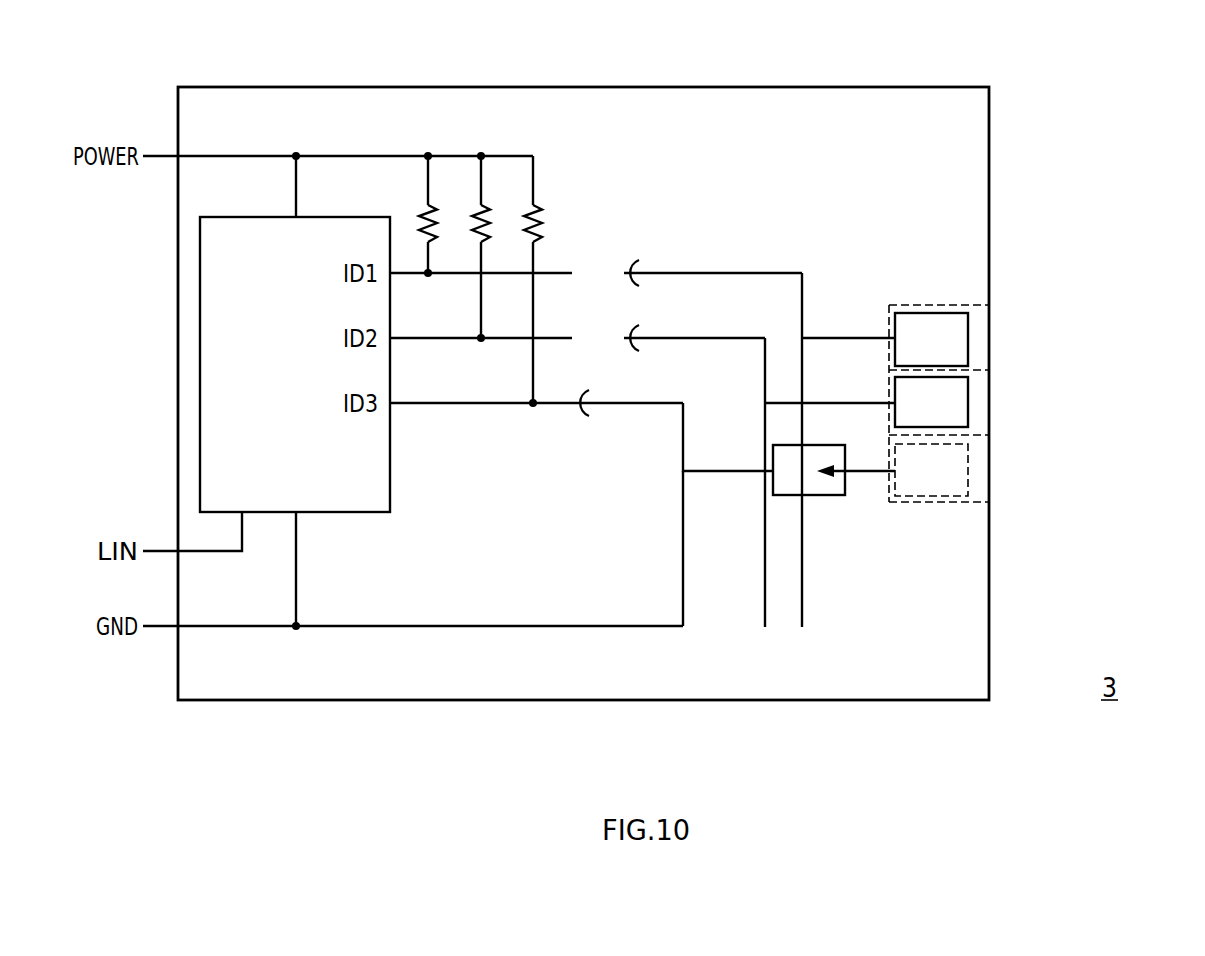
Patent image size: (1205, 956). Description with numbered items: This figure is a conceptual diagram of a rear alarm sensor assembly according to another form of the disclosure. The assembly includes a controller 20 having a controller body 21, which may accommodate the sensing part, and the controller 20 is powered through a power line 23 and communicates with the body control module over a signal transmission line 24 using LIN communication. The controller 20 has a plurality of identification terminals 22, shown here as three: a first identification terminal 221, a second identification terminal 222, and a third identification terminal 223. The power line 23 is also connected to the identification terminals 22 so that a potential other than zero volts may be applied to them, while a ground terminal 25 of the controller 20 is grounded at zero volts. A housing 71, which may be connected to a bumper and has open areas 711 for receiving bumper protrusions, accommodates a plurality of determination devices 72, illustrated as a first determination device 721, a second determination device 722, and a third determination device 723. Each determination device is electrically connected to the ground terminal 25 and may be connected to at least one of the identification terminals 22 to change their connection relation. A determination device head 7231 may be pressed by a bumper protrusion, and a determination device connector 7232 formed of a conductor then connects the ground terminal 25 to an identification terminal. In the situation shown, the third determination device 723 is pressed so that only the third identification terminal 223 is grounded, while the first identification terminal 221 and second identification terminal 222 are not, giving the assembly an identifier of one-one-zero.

The controller 20 is at (253, 356).
The controller body 21 is at (200, 363).
The identification terminals 22 is at (577, 266).
The first identification terminal 221 is at (510, 271).
The second identification terminal 222 is at (517, 337).
The third identification terminal 223 is at (636, 399).
The power line 23 is at (333, 156).
The signal transmission line 24 is at (218, 555).
The ground terminal 25 is at (218, 630).
The housing 71 is at (793, 86).
The open areas 711 is at (889, 305).
The determination devices 72 is at (876, 469).
The first determination device 721 is at (993, 338).
The second determination device 722 is at (993, 403).
The third determination device 723 is at (857, 498).
The determination device head 7231 is at (838, 497).
The determination device connector 7232 is at (683, 573).